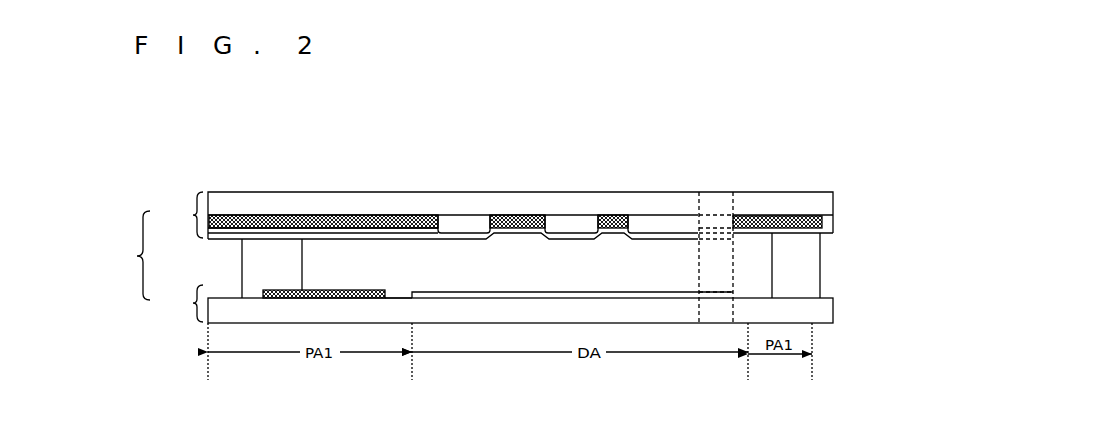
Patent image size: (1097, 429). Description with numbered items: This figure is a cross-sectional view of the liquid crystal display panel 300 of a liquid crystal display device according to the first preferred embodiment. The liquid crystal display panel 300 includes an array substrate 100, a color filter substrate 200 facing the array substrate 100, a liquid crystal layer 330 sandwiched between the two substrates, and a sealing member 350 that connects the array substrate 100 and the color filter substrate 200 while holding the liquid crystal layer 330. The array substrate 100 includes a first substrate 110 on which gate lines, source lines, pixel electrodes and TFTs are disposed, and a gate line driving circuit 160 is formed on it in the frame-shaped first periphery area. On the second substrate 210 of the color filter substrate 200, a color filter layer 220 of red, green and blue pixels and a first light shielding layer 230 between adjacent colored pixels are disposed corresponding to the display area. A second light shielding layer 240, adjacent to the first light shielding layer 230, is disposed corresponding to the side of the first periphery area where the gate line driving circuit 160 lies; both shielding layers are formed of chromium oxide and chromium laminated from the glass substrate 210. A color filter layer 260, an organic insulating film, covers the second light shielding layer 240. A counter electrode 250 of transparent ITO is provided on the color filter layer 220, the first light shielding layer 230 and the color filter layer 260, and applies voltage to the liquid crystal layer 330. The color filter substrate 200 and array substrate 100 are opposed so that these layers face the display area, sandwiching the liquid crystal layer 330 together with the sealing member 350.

The array substrate 100 is at (491, 347).
The first substrate 110 is at (520, 348).
The gate line driving circuit 160 is at (299, 344).
The color filter substrate 200 is at (491, 212).
The second substrate 210 is at (520, 187).
The color filter layer 220 is at (574, 184).
The first light shielding layer 230 is at (578, 182).
The second light shielding layer 240 is at (515, 182).
The counter electrode 250 is at (520, 169).
The color filter layer 260 is at (323, 188).
The liquid crystal display panel 300 is at (126, 255).
The liquid crystal layer 330 is at (370, 354).
The sealing member 350 is at (523, 265).